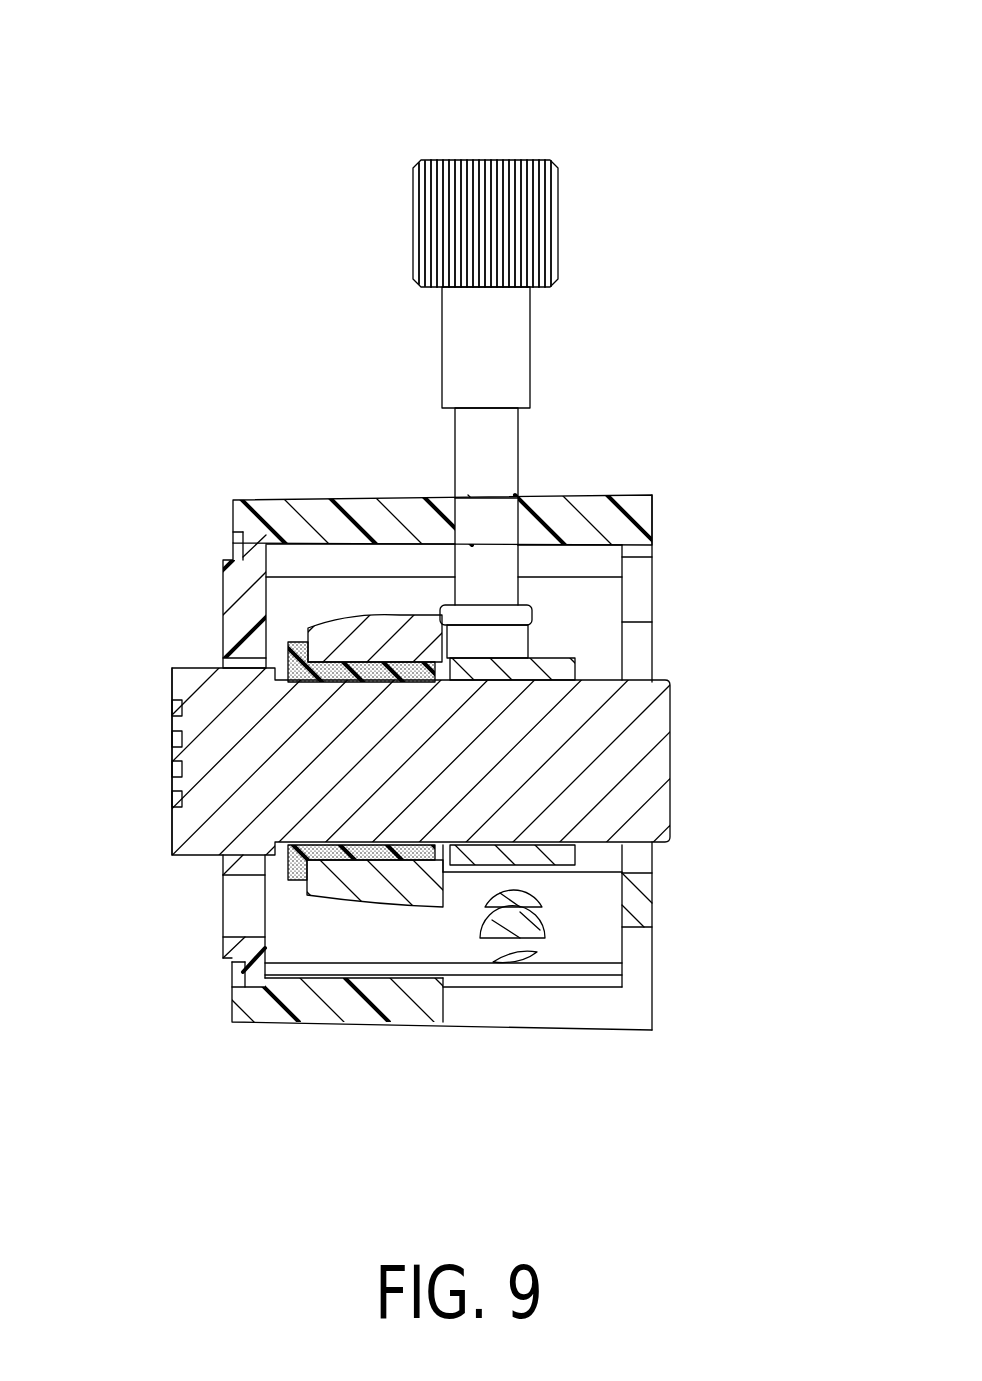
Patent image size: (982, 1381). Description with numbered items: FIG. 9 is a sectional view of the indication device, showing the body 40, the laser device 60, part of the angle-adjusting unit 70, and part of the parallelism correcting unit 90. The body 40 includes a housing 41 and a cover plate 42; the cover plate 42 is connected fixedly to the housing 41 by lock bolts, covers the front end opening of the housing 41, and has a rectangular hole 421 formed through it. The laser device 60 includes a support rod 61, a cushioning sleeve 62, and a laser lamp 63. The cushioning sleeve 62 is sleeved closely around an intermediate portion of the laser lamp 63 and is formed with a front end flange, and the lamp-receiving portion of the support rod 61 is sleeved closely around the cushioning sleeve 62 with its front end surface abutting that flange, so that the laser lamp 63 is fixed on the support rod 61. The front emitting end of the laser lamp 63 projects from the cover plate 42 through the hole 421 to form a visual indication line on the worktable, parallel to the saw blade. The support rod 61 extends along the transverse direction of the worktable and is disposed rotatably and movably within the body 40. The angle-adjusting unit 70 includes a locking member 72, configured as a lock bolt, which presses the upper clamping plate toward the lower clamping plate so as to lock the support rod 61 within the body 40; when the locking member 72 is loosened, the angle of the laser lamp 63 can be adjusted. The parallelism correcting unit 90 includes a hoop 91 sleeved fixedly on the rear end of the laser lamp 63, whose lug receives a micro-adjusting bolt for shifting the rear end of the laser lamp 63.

The angle-adjusting unit 70 is at (560, 329).
The locking member 72 is at (533, 222).
The body 40 is at (416, 670).
The housing 41 is at (610, 528).
The cover plate 42 is at (243, 593).
The rectangular hole 421 is at (245, 913).
The laser device 60 is at (444, 662).
The support rod 61 is at (330, 630).
The cushioning sleeve 62 is at (290, 677).
The laser lamp 63 is at (203, 703).
The parallelism correcting unit 90 is at (592, 660).
The hoop 91 is at (563, 858).